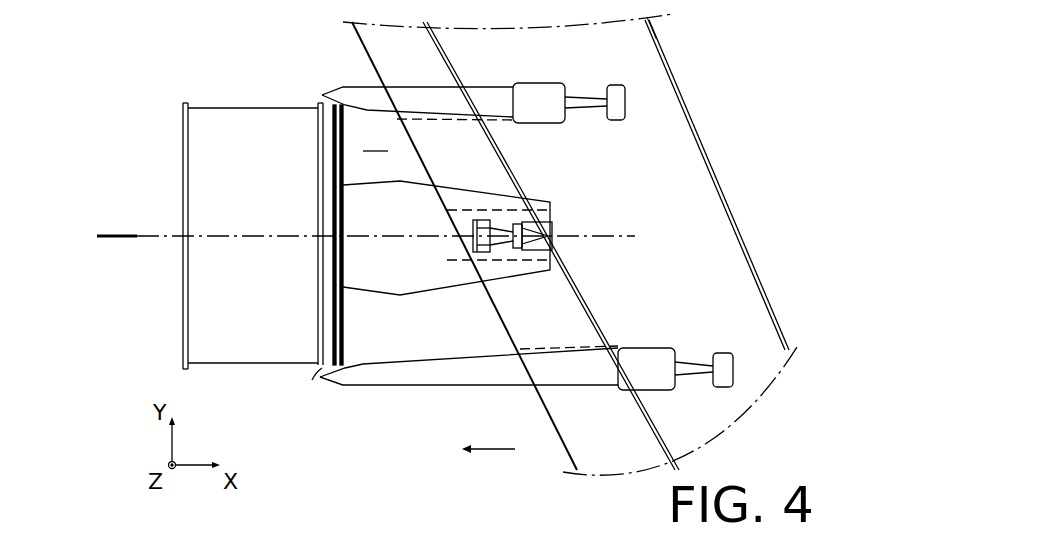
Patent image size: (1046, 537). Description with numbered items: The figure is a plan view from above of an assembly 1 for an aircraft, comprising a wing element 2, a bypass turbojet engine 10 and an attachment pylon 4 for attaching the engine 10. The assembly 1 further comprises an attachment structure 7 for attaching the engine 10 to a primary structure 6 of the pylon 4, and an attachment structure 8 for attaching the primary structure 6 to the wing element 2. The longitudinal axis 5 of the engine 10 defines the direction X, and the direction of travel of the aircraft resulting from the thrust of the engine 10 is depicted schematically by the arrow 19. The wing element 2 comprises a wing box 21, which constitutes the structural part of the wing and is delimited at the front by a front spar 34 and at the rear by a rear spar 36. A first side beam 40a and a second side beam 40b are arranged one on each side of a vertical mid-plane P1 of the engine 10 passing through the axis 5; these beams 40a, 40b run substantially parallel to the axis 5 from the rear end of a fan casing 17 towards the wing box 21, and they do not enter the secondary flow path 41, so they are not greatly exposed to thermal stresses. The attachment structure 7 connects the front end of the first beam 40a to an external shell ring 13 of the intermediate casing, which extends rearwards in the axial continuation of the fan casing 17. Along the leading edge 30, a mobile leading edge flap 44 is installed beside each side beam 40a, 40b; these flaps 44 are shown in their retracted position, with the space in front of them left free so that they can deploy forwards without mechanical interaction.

The assembly 1 is at (236, 58).
The wing element 2 is at (570, 244).
The attachment pylon 4 is at (526, 267).
The longitudinal axis 5 is at (153, 239).
The primary structure 6 is at (510, 398).
The attachment structure 7 is at (324, 393).
The attachment structure 8 is at (555, 224).
The bypass engine 10 is at (263, 244).
The external shell ring 13 is at (322, 368).
The fan casing 17 is at (263, 108).
The arrow 19 is at (492, 453).
The wing box 21 is at (731, 276).
The leading edge 30 is at (354, 40).
The front spar 34 is at (590, 300).
The rear spar 36 is at (690, 119).
The first side beam 40a is at (410, 396).
The second side beam 40b is at (416, 80).
The secondary flow path 41 is at (377, 139).
The mobile leading edge flap 44 is at (422, 150).
The vertical mid-plane P1 is at (113, 233).